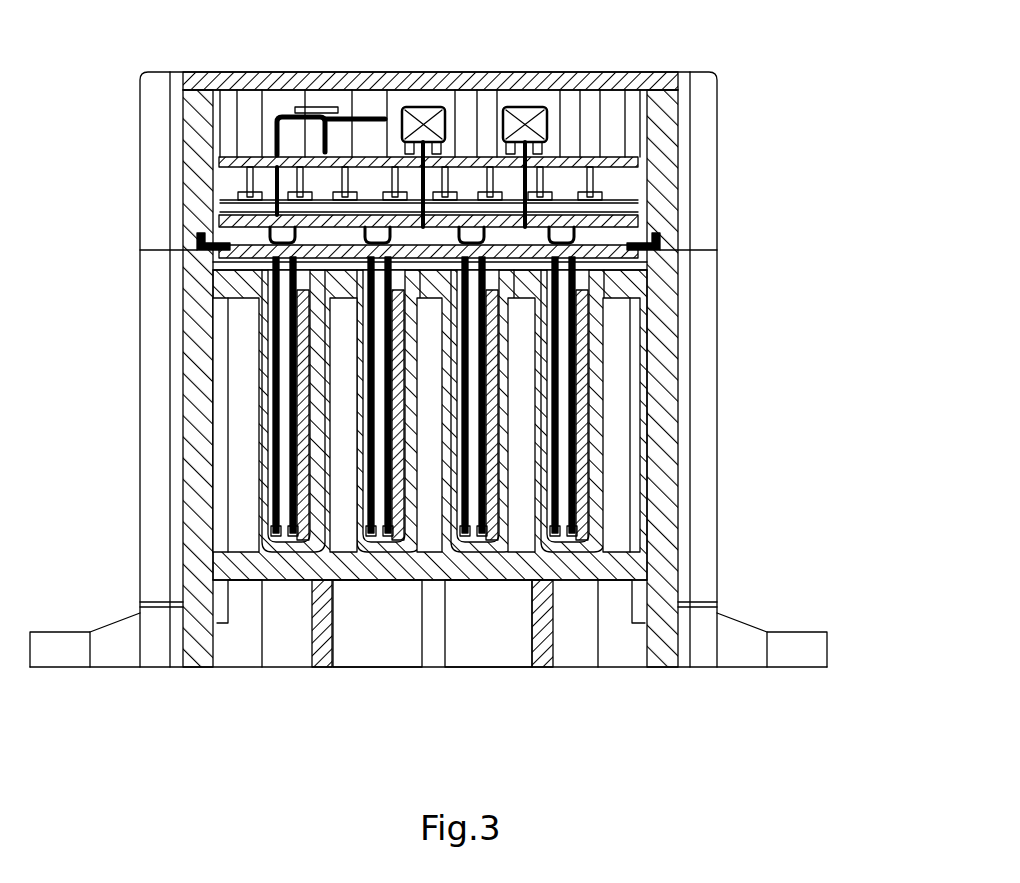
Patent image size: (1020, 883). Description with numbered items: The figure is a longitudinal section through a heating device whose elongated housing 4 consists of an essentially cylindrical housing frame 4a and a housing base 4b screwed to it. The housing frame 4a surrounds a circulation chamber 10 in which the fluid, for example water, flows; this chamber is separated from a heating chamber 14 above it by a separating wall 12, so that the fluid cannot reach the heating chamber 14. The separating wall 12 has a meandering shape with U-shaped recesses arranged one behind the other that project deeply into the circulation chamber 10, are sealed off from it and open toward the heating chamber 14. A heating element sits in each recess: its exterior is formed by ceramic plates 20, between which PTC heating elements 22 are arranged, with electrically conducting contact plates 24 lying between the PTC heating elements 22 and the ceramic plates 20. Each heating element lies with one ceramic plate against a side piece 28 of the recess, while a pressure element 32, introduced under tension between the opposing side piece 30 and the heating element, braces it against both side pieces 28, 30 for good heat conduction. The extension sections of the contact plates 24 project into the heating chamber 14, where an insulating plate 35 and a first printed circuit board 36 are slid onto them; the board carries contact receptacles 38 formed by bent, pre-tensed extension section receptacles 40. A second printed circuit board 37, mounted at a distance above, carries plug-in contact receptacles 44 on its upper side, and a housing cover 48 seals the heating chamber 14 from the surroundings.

The housing 4 is at (137, 92).
The housing frame 4a is at (198, 452).
The housing base 4b is at (110, 632).
The circulation chamber 10 is at (625, 458).
The separating wall 12 is at (622, 292).
The heating chamber 14 is at (585, 266).
The ceramic plates 20 is at (583, 537).
The PTC heating elements 22 is at (305, 368).
The contact plates 24 is at (285, 540).
The side piece 28 is at (362, 515).
The opposing side piece 30 is at (455, 515).
The pressure element 32 is at (405, 520).
The insulating plate 35 is at (662, 246).
The first printed circuit board 36 is at (640, 221).
The second printed circuit board 37 is at (618, 100).
The contact receptacles 38 is at (250, 282).
The extension section receptacles 40 is at (452, 140).
The plug-in contact receptacles 44 is at (366, 115).
The housing cover 48 is at (200, 88).